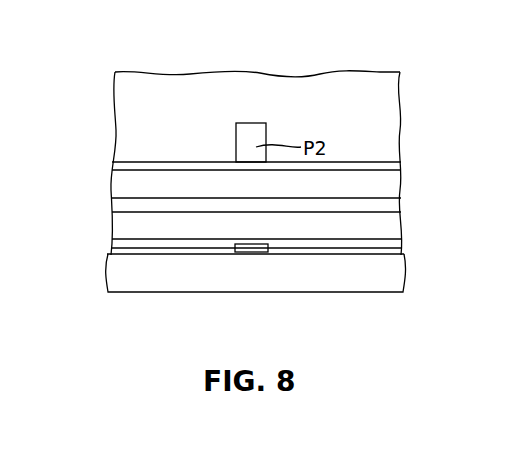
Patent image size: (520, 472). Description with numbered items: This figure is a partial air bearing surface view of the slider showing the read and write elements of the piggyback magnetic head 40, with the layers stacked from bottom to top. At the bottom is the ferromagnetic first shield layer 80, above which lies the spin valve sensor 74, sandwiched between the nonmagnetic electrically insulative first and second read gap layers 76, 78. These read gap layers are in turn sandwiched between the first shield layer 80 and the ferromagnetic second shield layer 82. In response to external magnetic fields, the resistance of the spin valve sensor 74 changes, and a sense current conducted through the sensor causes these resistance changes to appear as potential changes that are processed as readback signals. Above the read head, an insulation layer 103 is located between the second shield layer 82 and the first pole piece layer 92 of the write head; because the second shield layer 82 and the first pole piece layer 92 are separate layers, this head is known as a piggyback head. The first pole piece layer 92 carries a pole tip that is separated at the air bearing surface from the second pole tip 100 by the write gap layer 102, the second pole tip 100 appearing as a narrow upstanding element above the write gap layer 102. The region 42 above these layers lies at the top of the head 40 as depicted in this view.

The piggyback magnetic head 40 is at (420, 85).
The upper layer / top region 42 is at (117, 97).
The write gap layer 102 is at (177, 160).
The second pole tip 100 is at (247, 128).
The first pole piece layer 92 is at (115, 182).
The insulation layer 103 is at (393, 208).
The second shield layer 82 is at (112, 228).
The first read gap layer 76 is at (167, 256).
The spin valve sensor 74 is at (250, 254).
The second read gap layer 78 is at (365, 247).
The first shield layer 80 is at (393, 277).